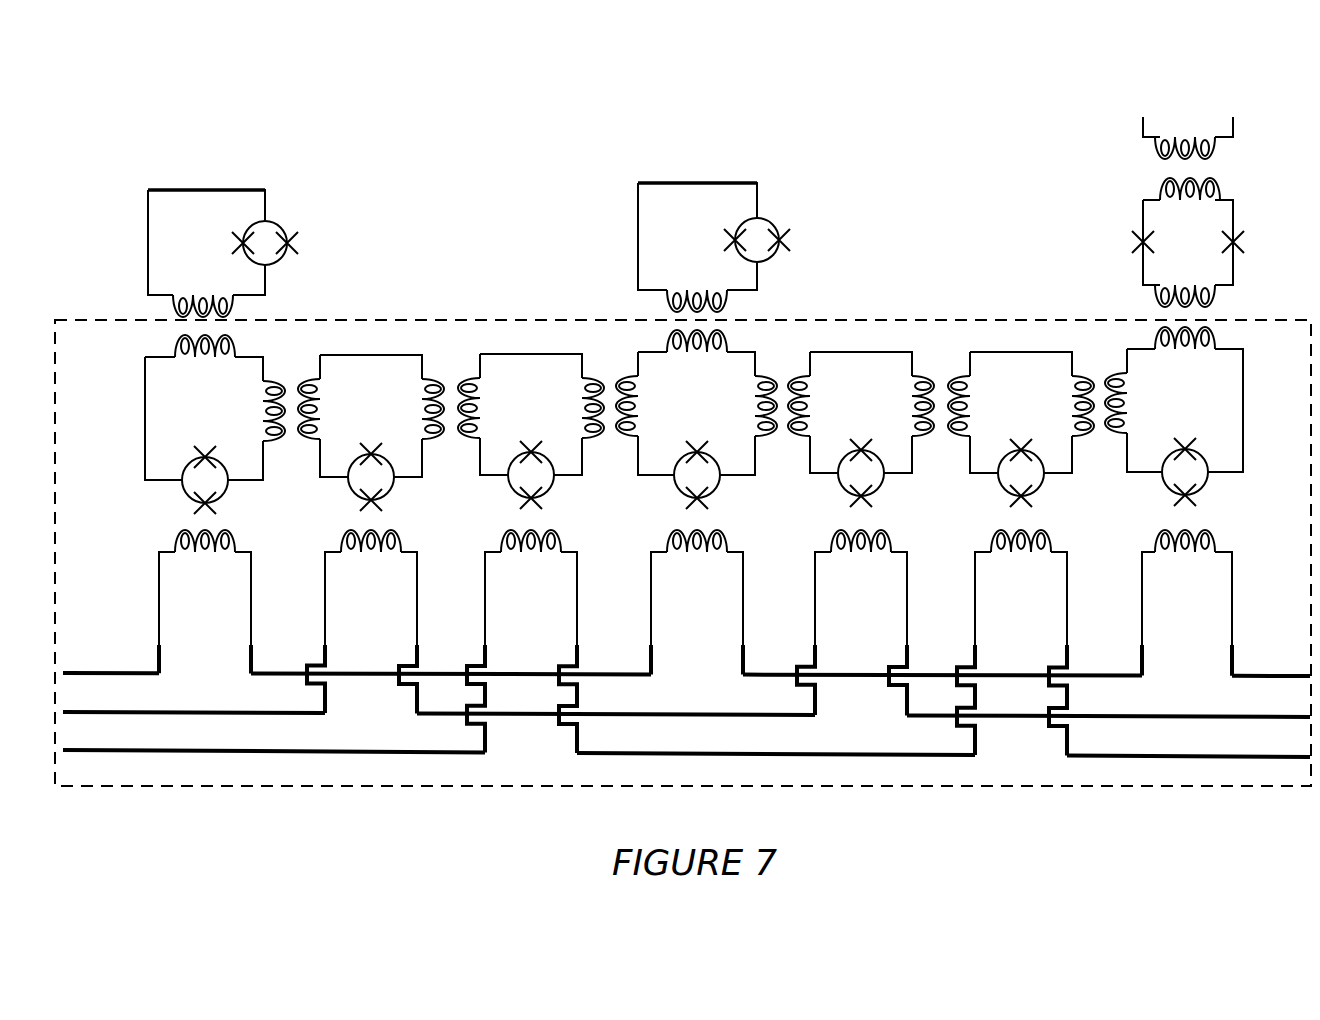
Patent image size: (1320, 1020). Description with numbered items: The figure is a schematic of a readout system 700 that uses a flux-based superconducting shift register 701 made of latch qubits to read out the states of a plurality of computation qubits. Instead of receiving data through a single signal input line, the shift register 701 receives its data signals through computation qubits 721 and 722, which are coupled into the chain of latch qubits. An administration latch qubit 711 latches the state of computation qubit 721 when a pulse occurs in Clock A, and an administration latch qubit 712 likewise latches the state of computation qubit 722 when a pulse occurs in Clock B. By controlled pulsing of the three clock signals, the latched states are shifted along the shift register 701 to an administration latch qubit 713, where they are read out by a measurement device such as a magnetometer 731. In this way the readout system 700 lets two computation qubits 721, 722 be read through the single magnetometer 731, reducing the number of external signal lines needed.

The readout system 700 is at (142, 100).
The shift register 701 is at (207, 786).
The administration latch qubit 711 is at (263, 373).
The administration latch qubit 712 is at (755, 376).
The administration latch qubit 713 is at (1243, 376).
The computation qubit 721 is at (240, 190).
The computation qubit 722 is at (738, 183).
The magnetometer 731 is at (1143, 215).